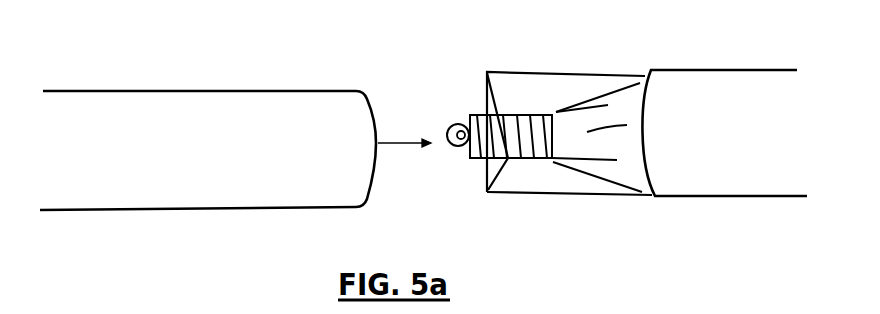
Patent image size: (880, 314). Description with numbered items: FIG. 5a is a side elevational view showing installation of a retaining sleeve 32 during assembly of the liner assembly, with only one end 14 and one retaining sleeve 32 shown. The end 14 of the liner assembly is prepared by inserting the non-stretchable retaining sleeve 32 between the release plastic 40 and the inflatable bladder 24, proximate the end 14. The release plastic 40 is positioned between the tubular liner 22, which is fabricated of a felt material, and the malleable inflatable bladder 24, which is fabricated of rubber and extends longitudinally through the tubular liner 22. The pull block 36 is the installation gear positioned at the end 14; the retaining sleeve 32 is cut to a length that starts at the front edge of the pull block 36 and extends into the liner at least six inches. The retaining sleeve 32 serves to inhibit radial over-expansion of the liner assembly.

The end 14 is at (455, 74).
The tubular liner 22 is at (713, 88).
The inflatable bladder 24 is at (628, 102).
The retaining sleeve 32 is at (200, 113).
The pull block 36 is at (463, 147).
The release plastic 40 is at (510, 82).